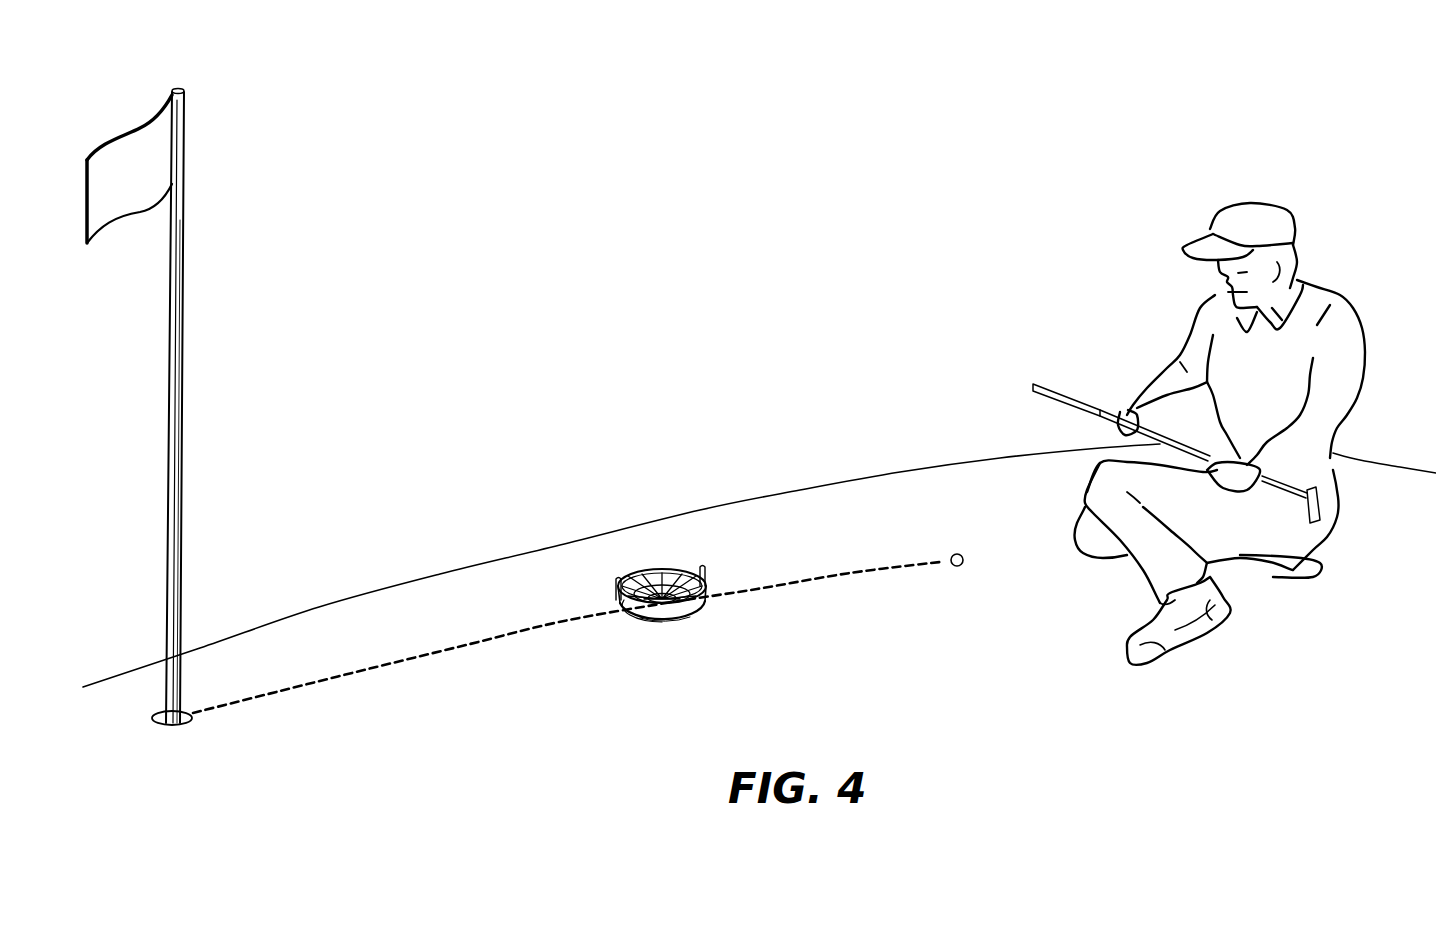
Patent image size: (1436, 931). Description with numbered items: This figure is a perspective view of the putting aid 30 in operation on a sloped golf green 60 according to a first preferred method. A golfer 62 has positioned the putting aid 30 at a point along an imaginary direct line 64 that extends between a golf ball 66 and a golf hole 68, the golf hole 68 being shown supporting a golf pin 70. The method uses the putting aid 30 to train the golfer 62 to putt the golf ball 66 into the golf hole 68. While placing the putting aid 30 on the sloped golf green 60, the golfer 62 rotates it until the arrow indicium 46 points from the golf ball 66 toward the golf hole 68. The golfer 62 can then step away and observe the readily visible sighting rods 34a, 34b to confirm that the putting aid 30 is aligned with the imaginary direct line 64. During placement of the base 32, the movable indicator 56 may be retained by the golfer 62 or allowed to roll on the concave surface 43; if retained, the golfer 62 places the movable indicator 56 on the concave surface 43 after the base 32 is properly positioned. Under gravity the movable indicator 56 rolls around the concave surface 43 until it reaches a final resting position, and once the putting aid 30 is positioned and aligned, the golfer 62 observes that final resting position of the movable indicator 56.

The putting aid 30 is at (657, 582).
The base 32 is at (656, 627).
The sighting rod 34a is at (616, 595).
The sighting rod 34b is at (705, 573).
The concave surface 43 is at (688, 602).
The arrow indicium 46 is at (681, 578).
The movable indicator 56 is at (628, 610).
The sloped golf green 60 is at (324, 622).
The golfer 62 is at (1208, 328).
The imaginary direct line 64 is at (840, 580).
The golf ball 66 is at (960, 554).
The golf hole 68 is at (185, 726).
The golf pin 70 is at (182, 484).